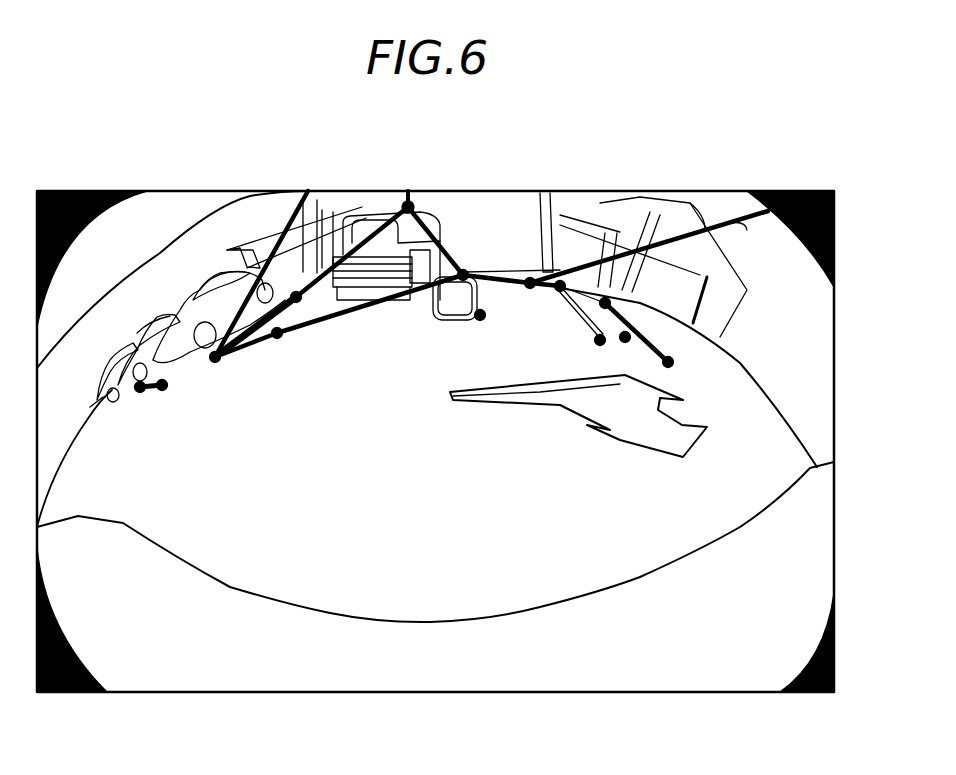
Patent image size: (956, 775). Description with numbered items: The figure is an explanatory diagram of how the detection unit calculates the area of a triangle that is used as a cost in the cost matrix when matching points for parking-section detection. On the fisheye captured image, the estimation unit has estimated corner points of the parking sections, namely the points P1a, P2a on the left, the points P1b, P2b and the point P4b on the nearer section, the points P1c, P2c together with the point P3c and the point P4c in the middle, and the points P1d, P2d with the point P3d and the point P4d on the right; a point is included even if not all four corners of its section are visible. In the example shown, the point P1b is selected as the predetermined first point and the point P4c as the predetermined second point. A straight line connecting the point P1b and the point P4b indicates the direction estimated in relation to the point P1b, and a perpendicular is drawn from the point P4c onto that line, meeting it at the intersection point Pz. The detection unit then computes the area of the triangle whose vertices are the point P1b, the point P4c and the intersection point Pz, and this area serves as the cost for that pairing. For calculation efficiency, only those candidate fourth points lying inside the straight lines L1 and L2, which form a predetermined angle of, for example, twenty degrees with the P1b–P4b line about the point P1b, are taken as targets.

The straight line L1 is at (262, 238).
The straight line L2 is at (717, 227).
The intersection point Pz is at (408, 205).
The point P1a is at (140, 390).
The point P2a is at (162, 388).
The point P1b is at (217, 360).
The point P2b is at (278, 337).
The point P4b is at (296, 295).
The point P1c is at (481, 319).
The point P2c is at (598, 343).
The point P3c is at (531, 281).
The point P4c is at (464, 273).
The point P1d is at (626, 342).
The point P2d is at (673, 364).
The point P3d is at (605, 301).
The point P4d is at (560, 284).